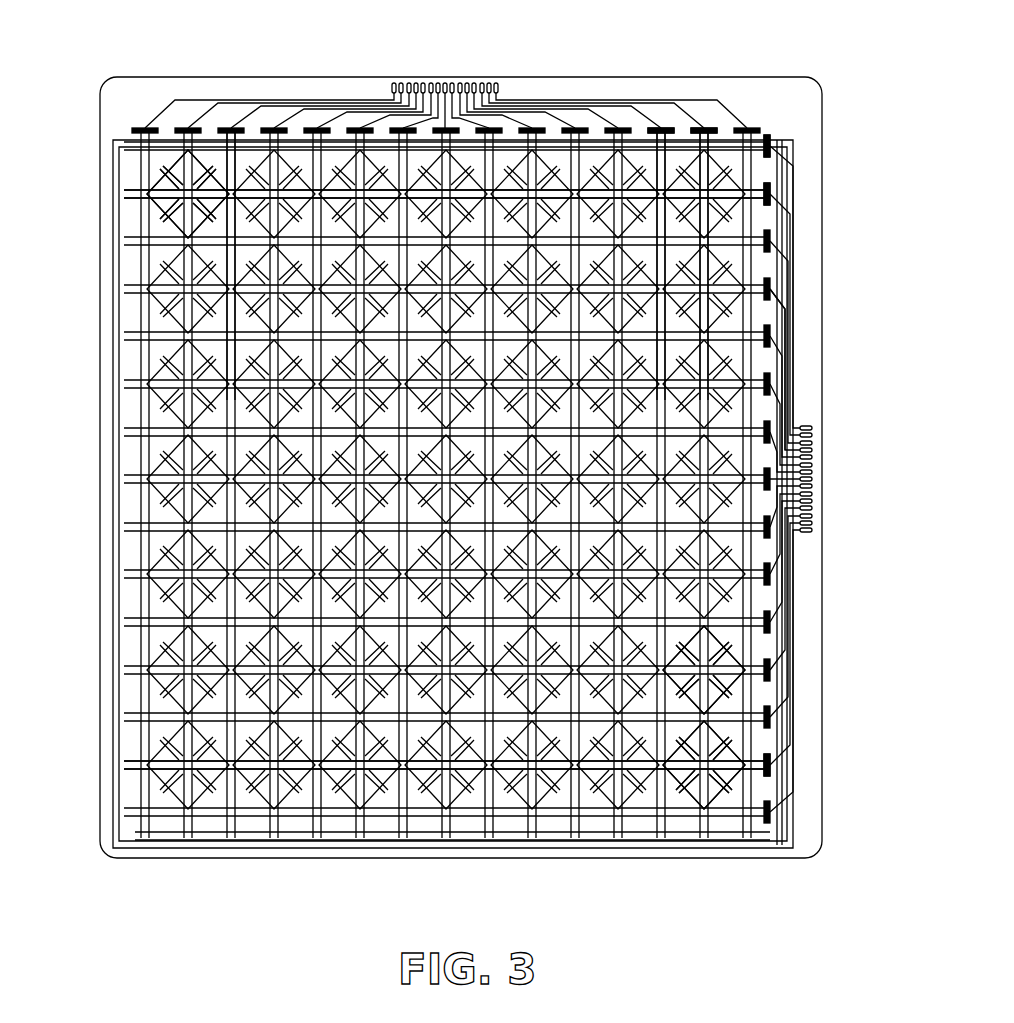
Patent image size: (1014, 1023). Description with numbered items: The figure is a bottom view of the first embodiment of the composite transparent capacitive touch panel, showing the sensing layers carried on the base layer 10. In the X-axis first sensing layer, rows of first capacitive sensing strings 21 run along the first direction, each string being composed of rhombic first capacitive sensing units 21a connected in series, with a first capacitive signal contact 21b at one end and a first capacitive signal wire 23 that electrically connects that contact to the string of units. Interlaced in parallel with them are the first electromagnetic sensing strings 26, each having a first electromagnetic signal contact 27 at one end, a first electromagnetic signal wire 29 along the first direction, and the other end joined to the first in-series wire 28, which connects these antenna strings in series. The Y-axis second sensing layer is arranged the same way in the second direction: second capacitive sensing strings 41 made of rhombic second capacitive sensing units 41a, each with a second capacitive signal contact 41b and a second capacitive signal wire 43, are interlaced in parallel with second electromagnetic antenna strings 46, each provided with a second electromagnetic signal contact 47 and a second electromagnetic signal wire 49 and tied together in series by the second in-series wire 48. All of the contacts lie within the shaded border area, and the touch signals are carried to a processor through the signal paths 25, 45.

The base layer 10 is at (440, 82).
The first capacitive sensing string 21 is at (773, 386).
The first capacitive sensing unit 21a is at (733, 783).
The first capacitive signal contact 21b is at (775, 196).
The first capacitive signal wire 23 is at (733, 750).
The signal path 25 is at (772, 287).
The first electromagnetic sensing string 26 is at (812, 343).
The first electromagnetic signal contact 27 is at (775, 150).
The first in-series wire 28 is at (112, 205).
The first electromagnetic signal wire 29 is at (735, 692).
The second capacitive sensing string 41 is at (616, 128).
The second capacitive sensing unit 41a is at (262, 168).
The second capacitive signal contact 41b is at (703, 128).
The second capacitive signal wire 43 is at (290, 165).
The signal path 45 is at (562, 100).
The second electromagnetic antenna string 46 is at (663, 128).
The second electromagnetic signal contact 47 is at (752, 126).
The second in-series wire 48 is at (628, 843).
The second electromagnetic signal wire 49 is at (213, 165).